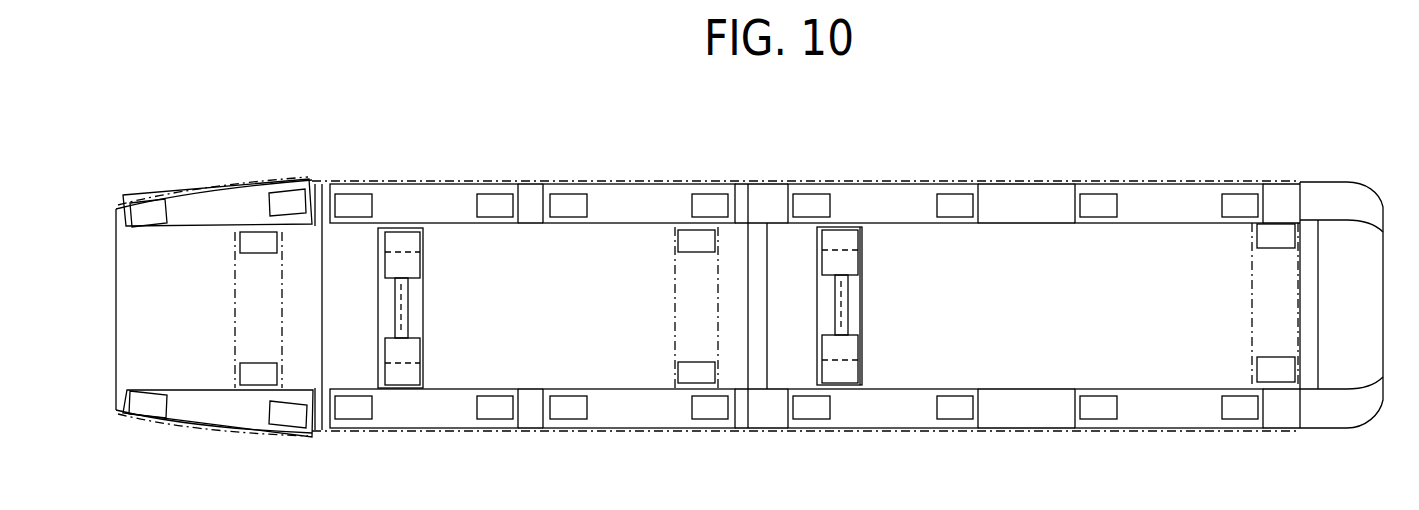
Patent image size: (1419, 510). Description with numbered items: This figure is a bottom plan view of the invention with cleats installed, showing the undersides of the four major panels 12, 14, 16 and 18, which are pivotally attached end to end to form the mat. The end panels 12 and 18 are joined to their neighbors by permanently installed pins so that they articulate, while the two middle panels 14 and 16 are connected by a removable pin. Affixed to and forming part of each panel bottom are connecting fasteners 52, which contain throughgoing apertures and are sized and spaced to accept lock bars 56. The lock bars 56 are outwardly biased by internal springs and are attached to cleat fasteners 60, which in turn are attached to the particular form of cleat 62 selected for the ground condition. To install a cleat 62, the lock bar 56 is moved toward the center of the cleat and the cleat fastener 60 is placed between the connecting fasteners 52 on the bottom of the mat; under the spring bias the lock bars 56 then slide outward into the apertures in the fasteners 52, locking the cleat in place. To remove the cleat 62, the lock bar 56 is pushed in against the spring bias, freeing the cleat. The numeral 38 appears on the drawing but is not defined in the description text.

The panel 12 is at (207, 203).
The panel 14 is at (533, 200).
The panel 16 is at (1027, 198).
The panel 18 is at (1333, 193).
The platform deck 38 is at (192, 341).
The connecting fastener 52 is at (408, 242).
The lock bar 56 is at (402, 317).
The cleat fastener 60 is at (408, 265).
The cleat 62 is at (253, 310).